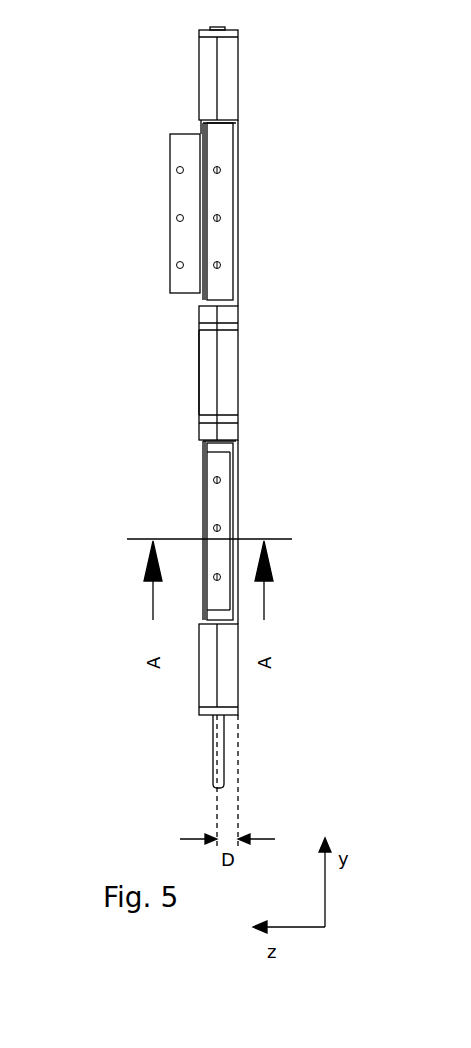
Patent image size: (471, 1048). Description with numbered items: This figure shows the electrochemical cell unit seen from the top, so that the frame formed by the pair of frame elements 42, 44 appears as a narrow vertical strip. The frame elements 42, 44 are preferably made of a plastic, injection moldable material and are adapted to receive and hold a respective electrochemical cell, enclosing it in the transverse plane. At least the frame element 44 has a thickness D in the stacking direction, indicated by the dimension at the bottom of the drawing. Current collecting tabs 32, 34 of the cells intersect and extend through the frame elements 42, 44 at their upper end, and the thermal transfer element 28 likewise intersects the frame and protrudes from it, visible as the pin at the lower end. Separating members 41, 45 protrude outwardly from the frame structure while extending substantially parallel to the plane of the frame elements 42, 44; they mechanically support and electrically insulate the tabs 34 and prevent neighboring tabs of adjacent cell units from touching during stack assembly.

The thermal transfer element 28 is at (215, 770).
The current collecting tab 32 is at (182, 282).
The current collecting tab 34 is at (218, 193).
The separating member 41 is at (205, 500).
The frame element 42 is at (212, 390).
The frame element 44 is at (230, 365).
The separating member 45 is at (236, 248).